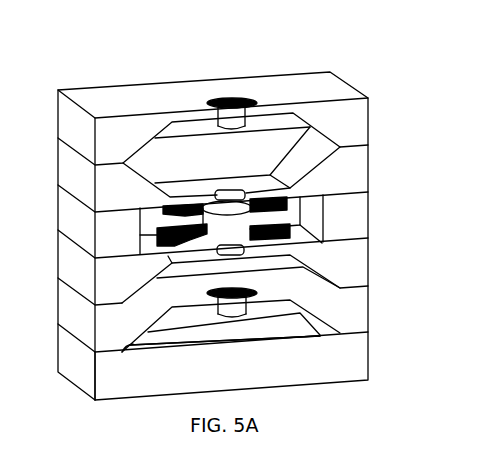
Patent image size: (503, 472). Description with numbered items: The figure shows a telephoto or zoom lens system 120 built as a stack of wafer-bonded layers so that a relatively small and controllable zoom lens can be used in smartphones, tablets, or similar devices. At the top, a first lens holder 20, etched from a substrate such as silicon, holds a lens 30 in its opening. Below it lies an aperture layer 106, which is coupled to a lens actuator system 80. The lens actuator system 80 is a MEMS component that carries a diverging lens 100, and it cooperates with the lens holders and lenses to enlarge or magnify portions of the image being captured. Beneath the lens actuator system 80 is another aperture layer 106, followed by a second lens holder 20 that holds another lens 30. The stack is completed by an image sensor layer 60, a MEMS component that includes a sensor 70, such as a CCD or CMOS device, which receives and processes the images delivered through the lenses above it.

The zoom lens system 120 is at (372, 66).
The lens holder 20 is at (373, 125).
The aperture layer 106 is at (373, 177).
The lens actuator system 80 is at (373, 222).
The diverging lens 100 is at (215, 220).
The lens 30 is at (232, 110).
The image sensor layer 60 is at (373, 366).
The sensor 70 is at (190, 338).